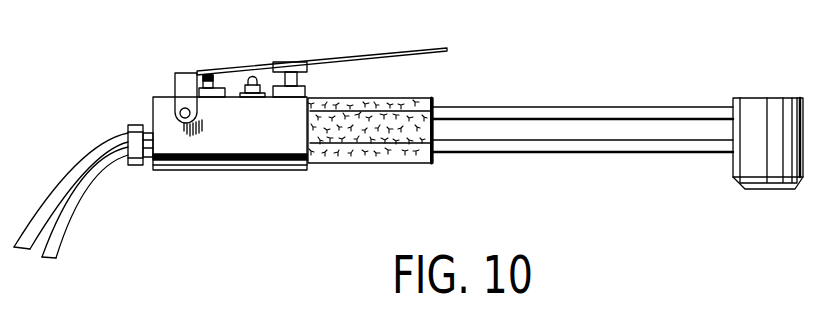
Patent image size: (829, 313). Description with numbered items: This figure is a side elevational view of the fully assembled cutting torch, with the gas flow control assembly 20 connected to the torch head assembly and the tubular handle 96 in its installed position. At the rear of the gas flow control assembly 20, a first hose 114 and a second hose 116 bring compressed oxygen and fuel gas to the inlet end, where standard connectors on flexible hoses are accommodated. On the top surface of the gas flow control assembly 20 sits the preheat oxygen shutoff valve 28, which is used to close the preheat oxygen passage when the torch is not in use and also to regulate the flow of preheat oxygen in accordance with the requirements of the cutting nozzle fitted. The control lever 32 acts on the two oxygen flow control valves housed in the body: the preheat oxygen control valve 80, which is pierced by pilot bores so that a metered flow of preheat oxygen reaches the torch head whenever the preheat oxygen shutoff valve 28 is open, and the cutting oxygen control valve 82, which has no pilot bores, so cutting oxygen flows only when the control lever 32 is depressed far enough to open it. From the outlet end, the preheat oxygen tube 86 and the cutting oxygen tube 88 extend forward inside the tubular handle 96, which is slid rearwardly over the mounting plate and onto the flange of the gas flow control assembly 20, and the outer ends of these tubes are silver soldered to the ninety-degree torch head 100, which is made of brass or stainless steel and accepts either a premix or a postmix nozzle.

The gas flow control assembly 20 is at (269, 142).
The preheat oxygen shutoff valve 28 is at (290, 63).
The control lever 32 is at (415, 50).
The preheat oxygen control valve 80 is at (215, 80).
The cutting oxygen control valve 82 is at (239, 88).
The preheat oxygen tube 86 is at (611, 146).
The cutting oxygen tube 88 is at (592, 113).
The tubular handle 96 is at (398, 152).
The torch head 100 is at (752, 101).
The first hose 114 is at (107, 147).
The second hose 116 is at (70, 200).